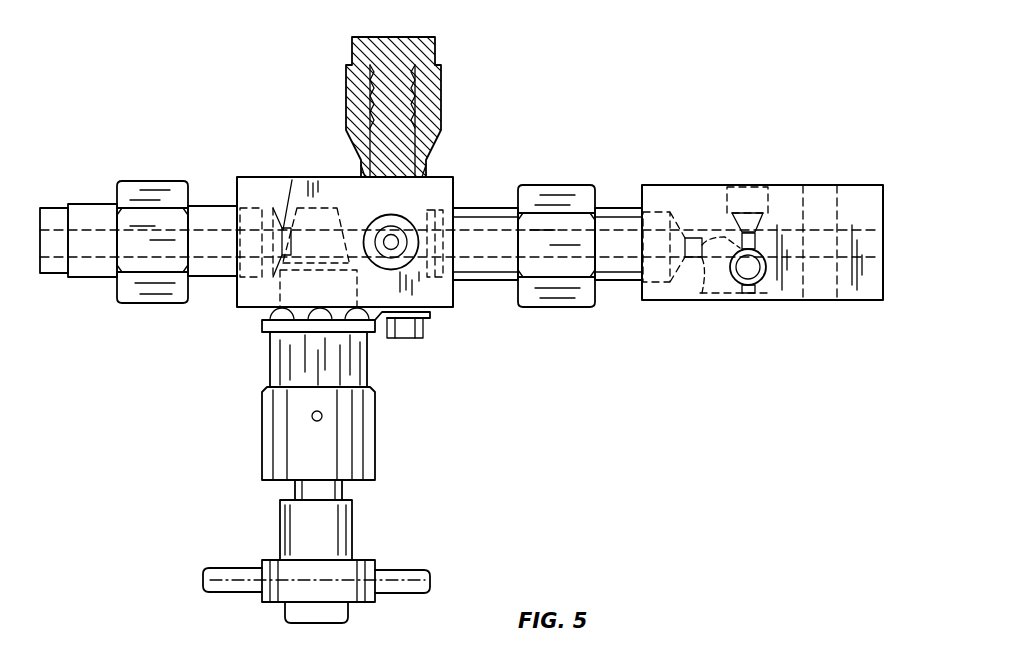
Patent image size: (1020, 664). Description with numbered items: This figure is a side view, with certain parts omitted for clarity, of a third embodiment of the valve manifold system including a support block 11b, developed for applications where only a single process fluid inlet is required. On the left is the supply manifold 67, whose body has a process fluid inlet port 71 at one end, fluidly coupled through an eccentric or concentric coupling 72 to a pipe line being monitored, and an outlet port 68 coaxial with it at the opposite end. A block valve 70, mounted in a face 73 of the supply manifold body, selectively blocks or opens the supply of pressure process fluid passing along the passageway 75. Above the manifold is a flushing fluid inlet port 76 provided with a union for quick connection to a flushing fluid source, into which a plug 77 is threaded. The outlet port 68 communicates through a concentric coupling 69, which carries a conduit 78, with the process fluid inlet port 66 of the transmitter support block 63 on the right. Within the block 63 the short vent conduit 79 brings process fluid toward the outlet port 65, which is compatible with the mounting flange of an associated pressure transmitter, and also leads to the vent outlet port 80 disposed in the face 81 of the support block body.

The support block 11b is at (837, 100).
The transmitter support block 63 is at (663, 193).
The outlet port 65 is at (717, 285).
The process fluid inlet port 66 is at (653, 283).
The supply manifold 67 is at (260, 180).
The outlet port 68 is at (437, 270).
The concentric coupling 69 is at (550, 292).
The block valve 70 is at (360, 433).
The process fluid inlet port 71 is at (247, 273).
The eccentric or concentric coupling 72 is at (160, 182).
The face 73 is at (252, 308).
The passageway 75 is at (292, 180).
The flushing fluid inlet port 76 is at (422, 157).
The plug 77 is at (393, 45).
The conduit 78 is at (490, 230).
The vent conduit 79 is at (697, 240).
The vent outlet port 80 is at (758, 190).
The face 81 is at (868, 185).